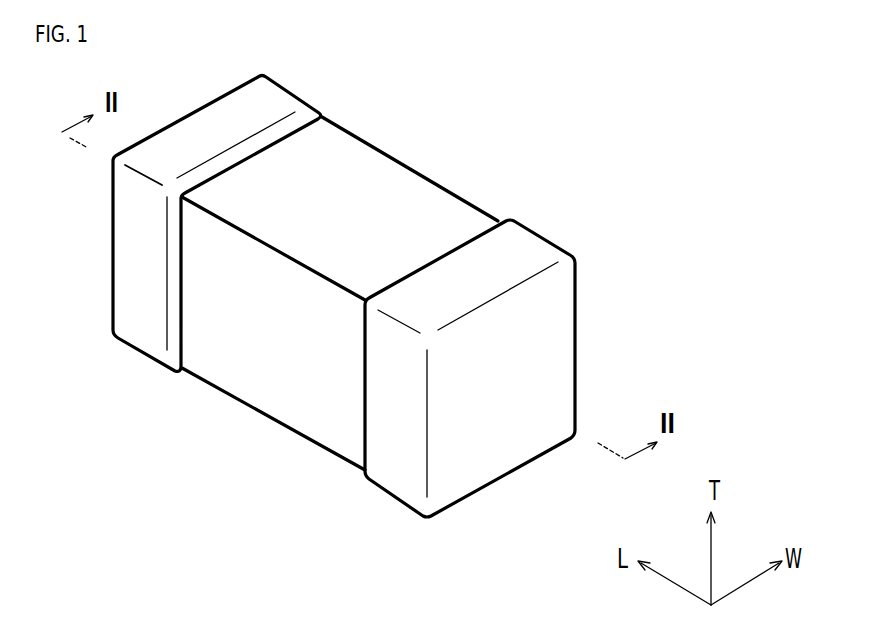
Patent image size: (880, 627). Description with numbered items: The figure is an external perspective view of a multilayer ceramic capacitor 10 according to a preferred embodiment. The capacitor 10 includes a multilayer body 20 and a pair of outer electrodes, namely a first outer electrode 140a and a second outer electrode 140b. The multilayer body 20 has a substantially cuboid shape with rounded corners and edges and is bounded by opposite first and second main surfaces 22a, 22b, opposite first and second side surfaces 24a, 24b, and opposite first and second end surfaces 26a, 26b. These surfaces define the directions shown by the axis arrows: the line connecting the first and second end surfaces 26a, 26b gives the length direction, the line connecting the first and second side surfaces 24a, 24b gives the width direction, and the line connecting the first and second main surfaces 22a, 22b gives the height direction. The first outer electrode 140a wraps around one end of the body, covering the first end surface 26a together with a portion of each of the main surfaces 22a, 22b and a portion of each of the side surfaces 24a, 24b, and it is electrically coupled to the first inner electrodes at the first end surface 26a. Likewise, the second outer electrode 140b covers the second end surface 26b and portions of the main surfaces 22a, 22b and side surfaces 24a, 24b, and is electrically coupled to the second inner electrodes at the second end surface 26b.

The multilayer ceramic capacitor 10 is at (561, 97).
The multilayer body 20 is at (387, 155).
The first main surface 22a is at (420, 207).
The second main surface 22b is at (228, 397).
The first side surface 24a is at (328, 425).
The second side surface 24b is at (480, 207).
The first end surface 26a is at (543, 342).
The second end surface 26b is at (108, 270).
The first outer electrode 140a is at (480, 490).
The second outer electrode 140b is at (112, 248).